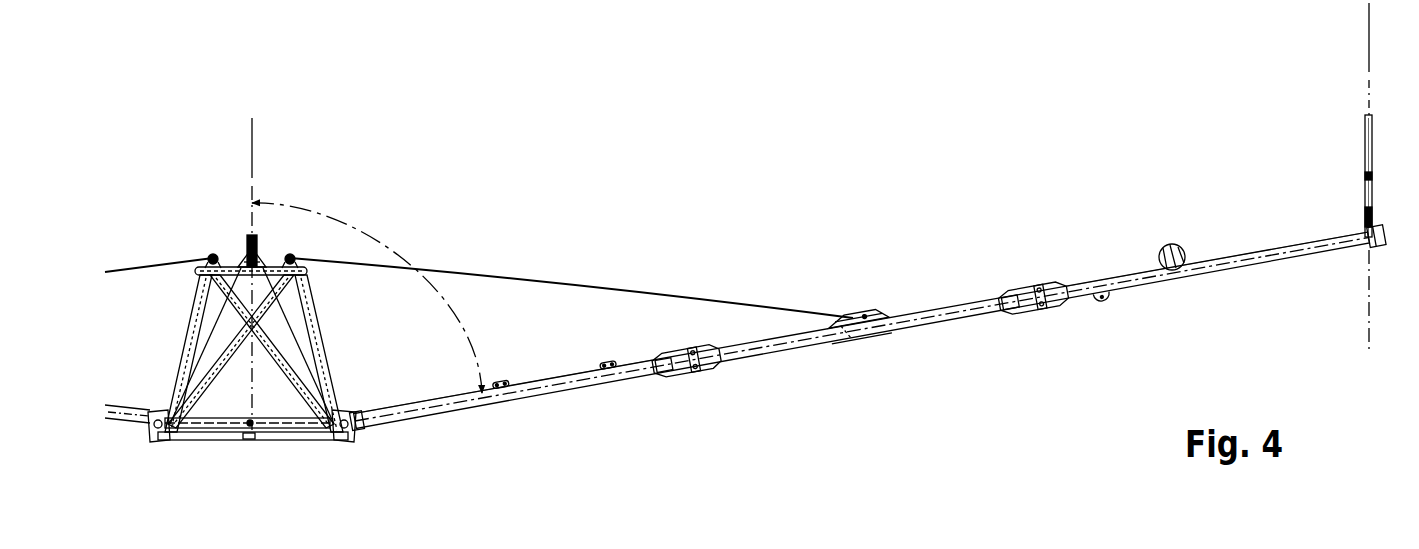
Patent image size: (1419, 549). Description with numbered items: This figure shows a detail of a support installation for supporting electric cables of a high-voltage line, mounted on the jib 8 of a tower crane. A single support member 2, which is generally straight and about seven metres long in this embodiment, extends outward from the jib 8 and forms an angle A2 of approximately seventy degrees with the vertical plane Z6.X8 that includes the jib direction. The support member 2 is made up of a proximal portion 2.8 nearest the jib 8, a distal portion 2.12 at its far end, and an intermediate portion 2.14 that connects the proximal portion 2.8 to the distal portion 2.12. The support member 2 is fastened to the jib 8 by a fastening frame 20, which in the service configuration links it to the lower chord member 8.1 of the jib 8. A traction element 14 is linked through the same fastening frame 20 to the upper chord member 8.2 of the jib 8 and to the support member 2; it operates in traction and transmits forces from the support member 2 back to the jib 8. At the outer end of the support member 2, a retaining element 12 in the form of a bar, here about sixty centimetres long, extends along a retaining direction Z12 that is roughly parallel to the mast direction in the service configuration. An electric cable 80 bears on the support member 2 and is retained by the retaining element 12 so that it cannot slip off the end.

The support member 2 is at (867, 319).
The proximal portion 2.8 is at (398, 437).
The distal portion 2.12 is at (1318, 267).
The intermediate portion 2.14 is at (862, 352).
The jib 8 is at (220, 341).
The lower chord member 8.1 is at (270, 440).
The upper chord member 8.2 is at (237, 266).
The retaining element 12 is at (1365, 148).
The traction element 14 is at (580, 287).
The fastening frame 20 is at (178, 374).
The electric cable 80 is at (1172, 245).
The angle A2 is at (367, 298).
The vertical plane Z6.X8 is at (251, 258).
The retaining direction Z12 is at (1362, 194).